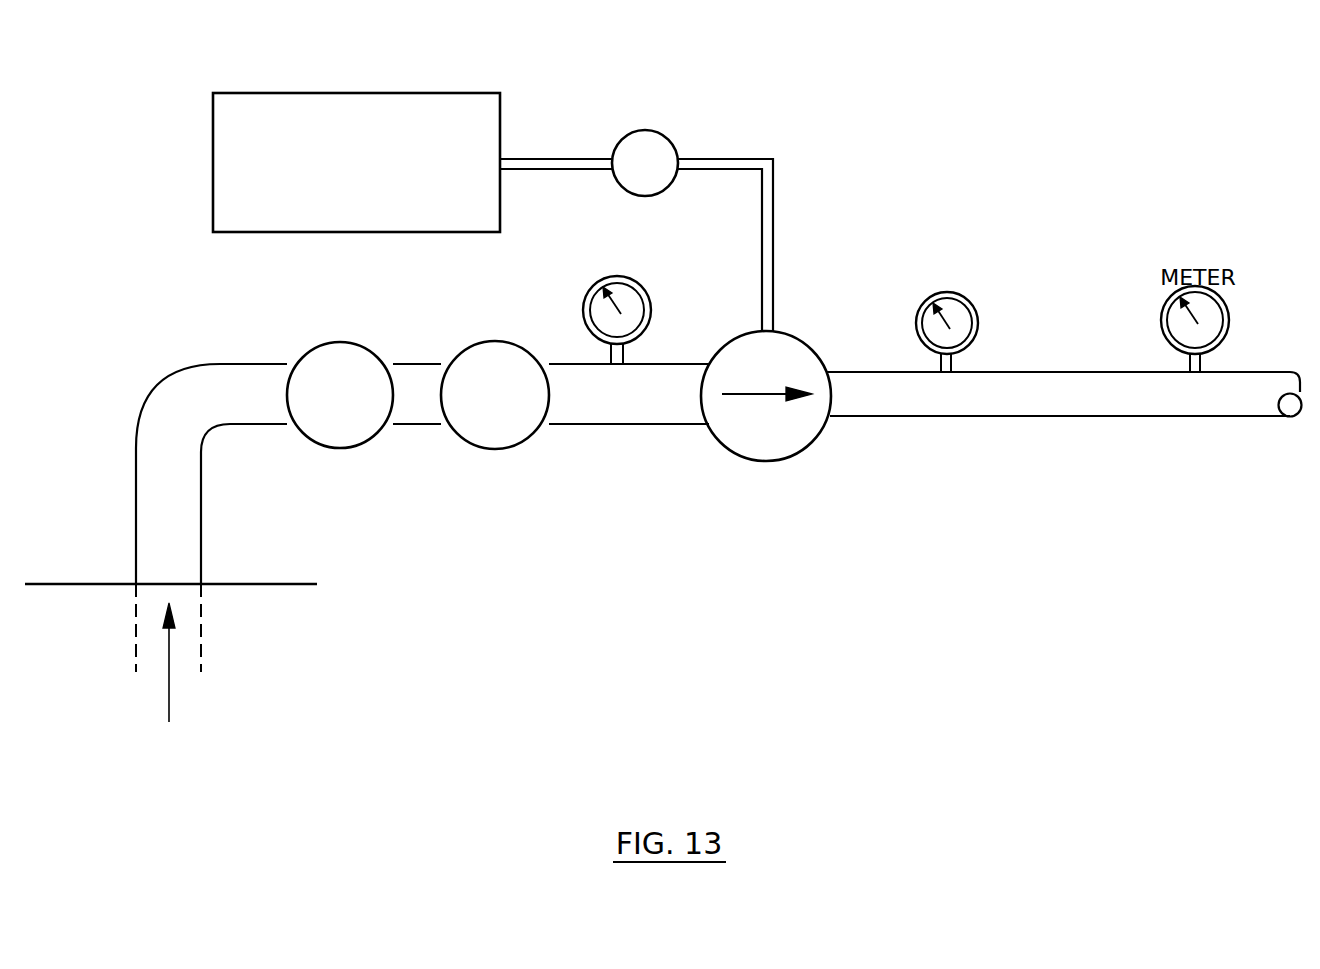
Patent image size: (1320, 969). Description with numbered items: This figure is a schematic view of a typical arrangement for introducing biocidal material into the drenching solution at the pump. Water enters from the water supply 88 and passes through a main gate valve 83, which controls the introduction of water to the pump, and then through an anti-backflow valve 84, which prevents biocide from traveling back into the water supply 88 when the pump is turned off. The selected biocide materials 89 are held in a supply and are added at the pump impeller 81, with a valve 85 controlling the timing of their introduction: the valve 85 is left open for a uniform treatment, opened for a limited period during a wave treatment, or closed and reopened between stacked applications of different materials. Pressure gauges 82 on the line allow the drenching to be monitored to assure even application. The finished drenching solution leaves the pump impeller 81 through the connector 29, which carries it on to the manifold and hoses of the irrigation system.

The biocide materials 89 is at (446, 93).
The valve 85 is at (667, 138).
The main gate valve 83 is at (335, 342).
The anti-backflow valve 84 is at (497, 342).
The water supply 88 is at (167, 546).
The pressure gauges 82 is at (651, 302).
The pump impeller 81 is at (810, 345).
The connector 29 is at (1045, 418).